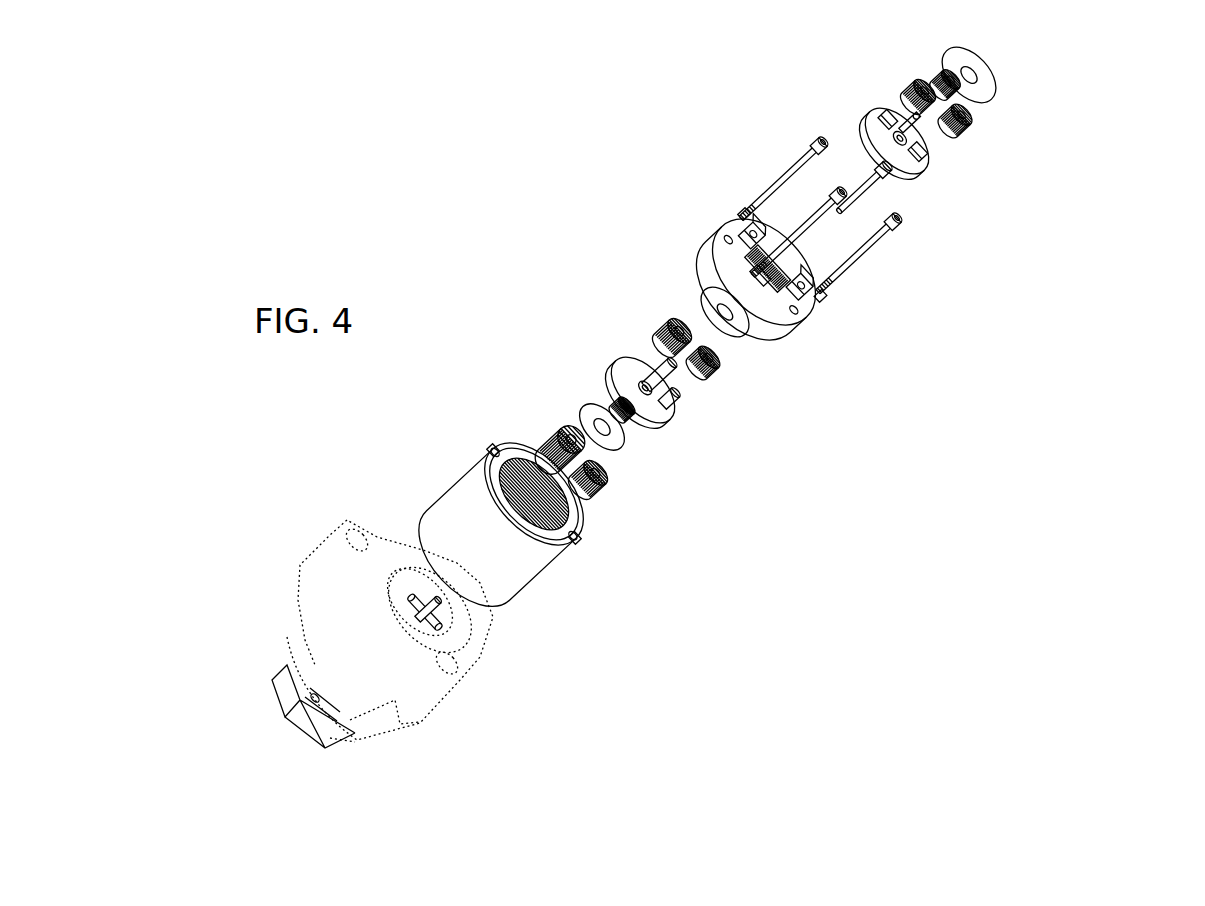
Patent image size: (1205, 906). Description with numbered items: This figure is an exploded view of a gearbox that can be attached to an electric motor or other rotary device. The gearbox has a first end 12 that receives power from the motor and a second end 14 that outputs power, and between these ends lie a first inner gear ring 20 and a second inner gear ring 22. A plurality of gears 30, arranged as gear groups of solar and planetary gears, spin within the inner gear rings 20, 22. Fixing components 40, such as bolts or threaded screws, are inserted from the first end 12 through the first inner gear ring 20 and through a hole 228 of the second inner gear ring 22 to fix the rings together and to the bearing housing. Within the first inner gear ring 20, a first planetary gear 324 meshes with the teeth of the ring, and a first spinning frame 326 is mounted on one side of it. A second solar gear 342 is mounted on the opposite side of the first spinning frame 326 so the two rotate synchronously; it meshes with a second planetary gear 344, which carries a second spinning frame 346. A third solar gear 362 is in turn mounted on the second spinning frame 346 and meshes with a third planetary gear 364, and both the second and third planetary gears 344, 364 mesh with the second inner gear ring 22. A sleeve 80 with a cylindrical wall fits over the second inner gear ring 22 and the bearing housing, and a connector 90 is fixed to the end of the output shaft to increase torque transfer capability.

The first end 12 is at (1003, 68).
The second end 14 is at (268, 672).
The first inner gear ring 20 is at (727, 268).
The second inner gear ring 22 is at (525, 566).
The gears 30 is at (1183, 172).
The fixing components 40 is at (773, 188).
The sleeve 80 is at (410, 665).
The connector 90 is at (322, 745).
The hole 228 is at (575, 533).
The first planetary gear 324 is at (963, 137).
The first spinning frame 326 is at (907, 170).
The second solar gear 342 is at (886, 176).
The second planetary gear 344 is at (712, 374).
The second spinning frame 346 is at (640, 422).
The third solar gear 362 is at (625, 432).
The third planetary gear 364 is at (600, 498).